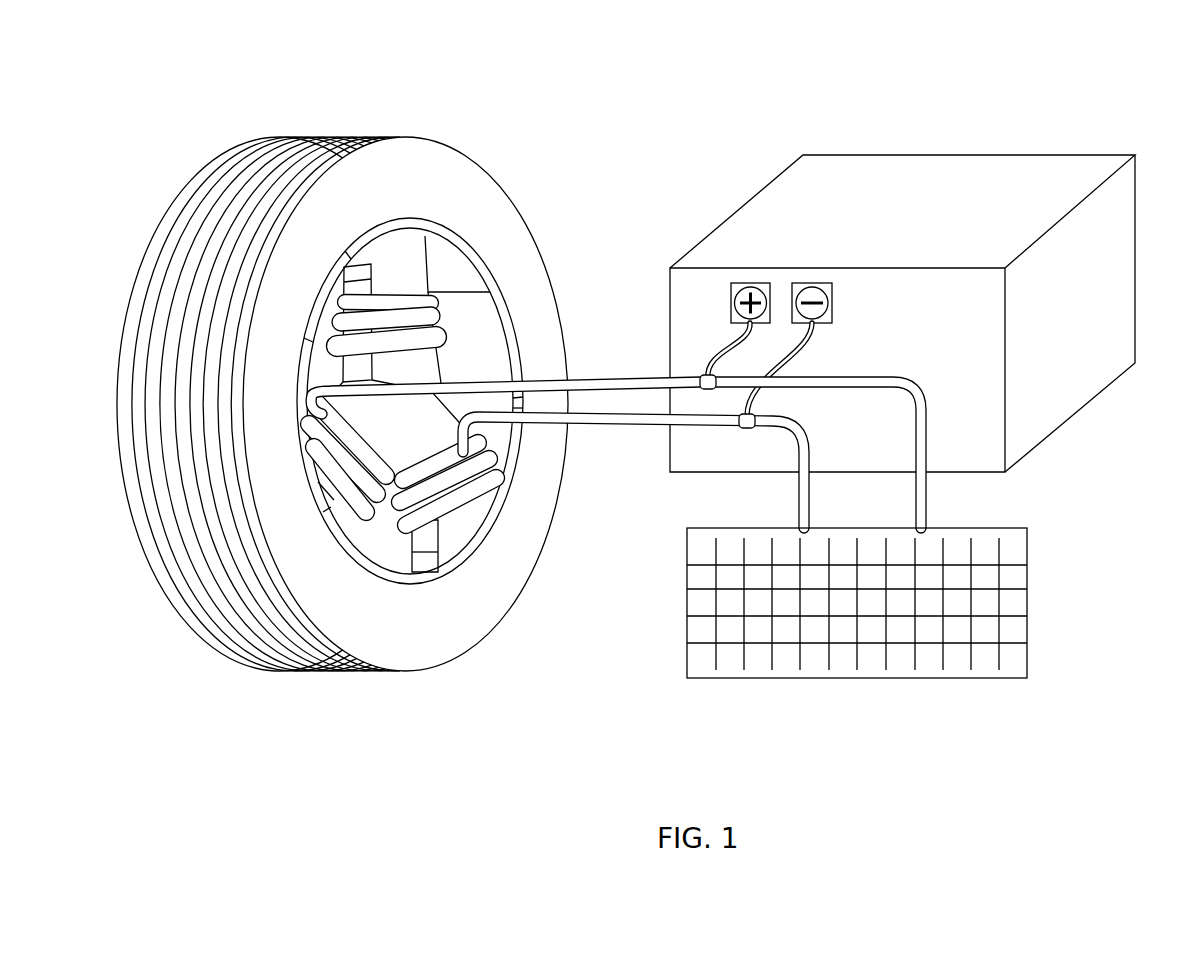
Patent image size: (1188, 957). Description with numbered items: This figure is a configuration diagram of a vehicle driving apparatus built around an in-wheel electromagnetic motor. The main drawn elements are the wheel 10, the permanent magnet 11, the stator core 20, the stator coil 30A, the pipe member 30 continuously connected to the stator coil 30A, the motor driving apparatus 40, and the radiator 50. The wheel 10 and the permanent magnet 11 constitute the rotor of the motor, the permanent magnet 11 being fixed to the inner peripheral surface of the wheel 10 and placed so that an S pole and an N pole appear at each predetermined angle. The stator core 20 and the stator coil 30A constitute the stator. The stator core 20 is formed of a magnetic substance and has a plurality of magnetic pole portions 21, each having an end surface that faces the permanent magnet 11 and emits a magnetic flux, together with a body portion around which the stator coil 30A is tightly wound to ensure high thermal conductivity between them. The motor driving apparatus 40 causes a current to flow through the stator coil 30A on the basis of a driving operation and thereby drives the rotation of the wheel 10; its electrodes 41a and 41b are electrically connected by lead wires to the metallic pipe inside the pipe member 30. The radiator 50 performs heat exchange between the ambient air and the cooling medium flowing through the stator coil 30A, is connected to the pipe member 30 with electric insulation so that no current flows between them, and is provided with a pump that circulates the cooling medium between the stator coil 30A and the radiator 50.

The wheel 10 is at (300, 137).
The permanent magnet 11 is at (505, 303).
The stator core 20 is at (493, 567).
The magnetic pole portion 21 is at (420, 240).
The pipe member 30 is at (623, 410).
The stator coil 30A is at (447, 310).
The motor driving apparatus 40 is at (908, 168).
The electrode 41a is at (732, 283).
The electrode 41b is at (793, 283).
The radiator 50 is at (1027, 540).